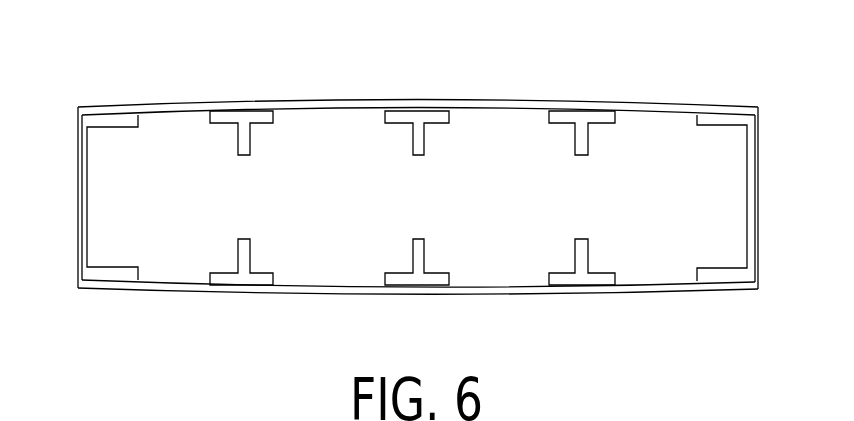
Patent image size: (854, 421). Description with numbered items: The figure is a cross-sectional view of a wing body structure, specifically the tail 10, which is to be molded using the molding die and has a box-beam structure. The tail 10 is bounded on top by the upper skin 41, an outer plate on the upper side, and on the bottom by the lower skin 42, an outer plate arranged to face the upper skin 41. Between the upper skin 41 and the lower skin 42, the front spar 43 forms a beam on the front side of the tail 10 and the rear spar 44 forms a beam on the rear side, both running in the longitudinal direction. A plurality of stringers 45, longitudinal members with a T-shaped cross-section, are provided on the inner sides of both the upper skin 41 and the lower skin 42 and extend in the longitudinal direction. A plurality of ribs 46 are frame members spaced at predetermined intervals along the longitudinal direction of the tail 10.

The tail 10 is at (420, 42).
The upper skin 41 is at (315, 98).
The lower skin 42 is at (337, 297).
The front spar 43 is at (78, 203).
The rear spar 44 is at (759, 203).
The stringers 45 is at (413, 271).
The ribs 46 is at (498, 138).